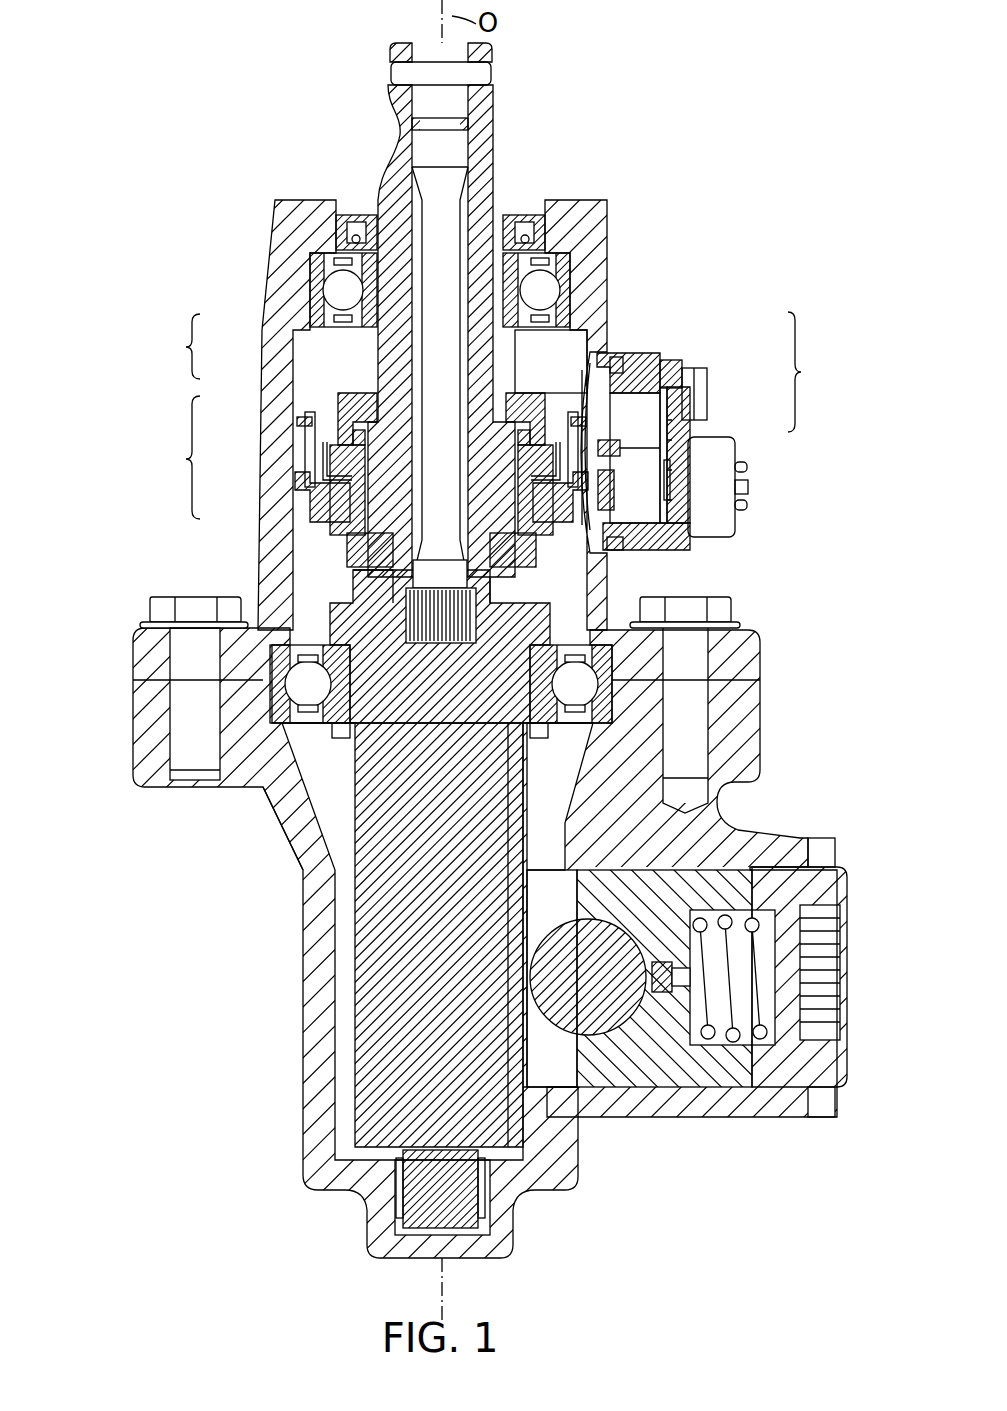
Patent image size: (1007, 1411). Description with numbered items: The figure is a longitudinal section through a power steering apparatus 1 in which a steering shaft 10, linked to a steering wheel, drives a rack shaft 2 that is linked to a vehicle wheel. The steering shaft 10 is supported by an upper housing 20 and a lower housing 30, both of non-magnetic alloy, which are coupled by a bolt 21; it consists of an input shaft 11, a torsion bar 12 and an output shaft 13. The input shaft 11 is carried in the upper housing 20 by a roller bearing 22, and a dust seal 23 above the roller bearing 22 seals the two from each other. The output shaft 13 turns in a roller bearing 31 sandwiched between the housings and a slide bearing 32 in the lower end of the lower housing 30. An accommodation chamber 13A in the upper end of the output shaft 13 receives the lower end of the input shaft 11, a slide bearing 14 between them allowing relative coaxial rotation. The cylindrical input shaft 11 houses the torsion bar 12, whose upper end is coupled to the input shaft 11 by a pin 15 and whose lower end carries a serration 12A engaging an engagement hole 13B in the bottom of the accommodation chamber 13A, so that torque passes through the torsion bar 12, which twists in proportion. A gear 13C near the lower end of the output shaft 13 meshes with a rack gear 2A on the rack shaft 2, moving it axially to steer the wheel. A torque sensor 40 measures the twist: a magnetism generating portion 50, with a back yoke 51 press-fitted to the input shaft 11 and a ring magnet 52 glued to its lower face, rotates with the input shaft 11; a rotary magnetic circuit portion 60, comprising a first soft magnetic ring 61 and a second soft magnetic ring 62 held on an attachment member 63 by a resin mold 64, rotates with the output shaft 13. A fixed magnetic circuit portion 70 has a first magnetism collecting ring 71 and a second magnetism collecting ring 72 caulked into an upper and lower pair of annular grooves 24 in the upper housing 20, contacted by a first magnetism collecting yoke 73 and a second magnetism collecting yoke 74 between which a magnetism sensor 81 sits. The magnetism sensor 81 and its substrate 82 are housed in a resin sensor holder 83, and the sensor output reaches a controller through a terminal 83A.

The power steering apparatus 1 is at (695, 86).
The rack shaft 2 is at (688, 1000).
The rack gear 2A is at (580, 1060).
The steering shaft 10 is at (449, 303).
The input shaft 11 is at (392, 170).
The torsion bar 12 is at (447, 233).
The serration 12A is at (420, 600).
The output shaft 13 is at (354, 878).
The accommodation chamber 13A is at (380, 580).
The engagement hole 13B is at (430, 612).
The gear 13C is at (560, 1130).
The slide bearing 14 is at (355, 545).
The pin 15 is at (488, 73).
The upper housing 20 is at (278, 208).
The bolt 21 is at (155, 612).
The roller bearing 22 is at (340, 258).
The dust seal 23 is at (330, 262).
The annular grooves 24 is at (620, 358).
The lower housing 30 is at (485, 943).
The roller bearing 31 is at (250, 790).
The slide bearing 32 is at (400, 1195).
The torque sensor 40 is at (575, 352).
The magnetism generating portion 50 is at (343, 378).
The back yoke 51 is at (350, 398).
The ring magnet 52 is at (340, 420).
The rotary magnetic circuit portion 60 is at (365, 465).
The first soft magnetic ring 61 is at (300, 420).
The second soft magnetic ring 62 is at (323, 465).
The attachment member 63 is at (335, 515).
The resin mold 64 is at (318, 495).
The fixed magnetic circuit portion 70 is at (711, 451).
The first magnetism collecting ring 71 is at (673, 362).
The second magnetism collecting ring 72 is at (622, 440).
The first magnetism collecting yoke 73 is at (660, 372).
The second magnetism collecting yoke 74 is at (610, 458).
The magnetism sensor 81 is at (690, 478).
The substrate 82 is at (690, 505).
The sensor holder 83 is at (757, 504).
The terminal 83A is at (748, 488).